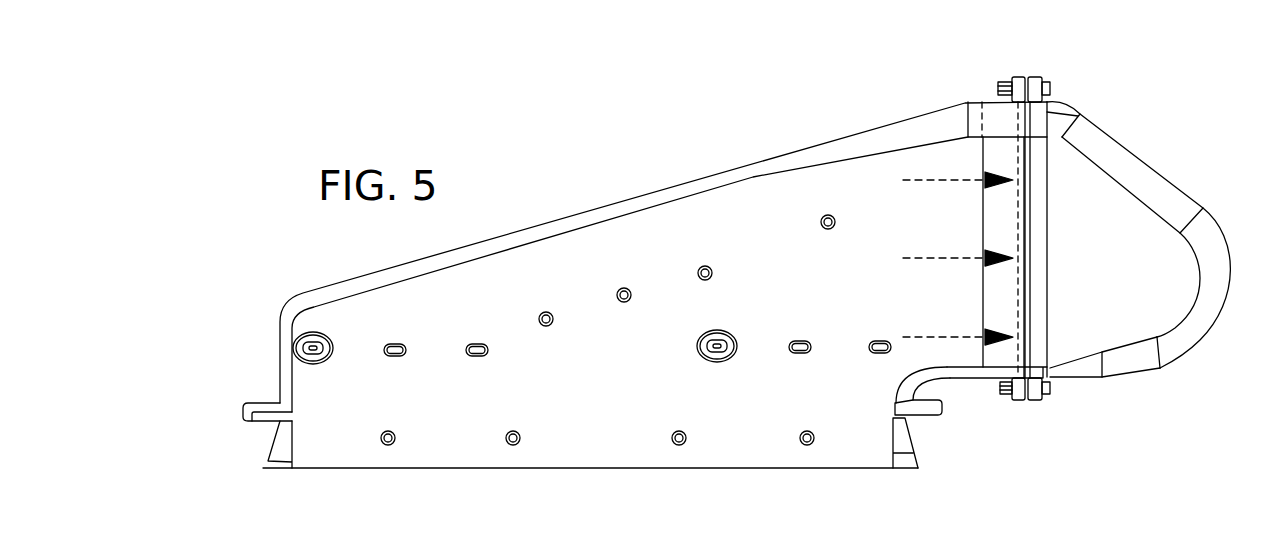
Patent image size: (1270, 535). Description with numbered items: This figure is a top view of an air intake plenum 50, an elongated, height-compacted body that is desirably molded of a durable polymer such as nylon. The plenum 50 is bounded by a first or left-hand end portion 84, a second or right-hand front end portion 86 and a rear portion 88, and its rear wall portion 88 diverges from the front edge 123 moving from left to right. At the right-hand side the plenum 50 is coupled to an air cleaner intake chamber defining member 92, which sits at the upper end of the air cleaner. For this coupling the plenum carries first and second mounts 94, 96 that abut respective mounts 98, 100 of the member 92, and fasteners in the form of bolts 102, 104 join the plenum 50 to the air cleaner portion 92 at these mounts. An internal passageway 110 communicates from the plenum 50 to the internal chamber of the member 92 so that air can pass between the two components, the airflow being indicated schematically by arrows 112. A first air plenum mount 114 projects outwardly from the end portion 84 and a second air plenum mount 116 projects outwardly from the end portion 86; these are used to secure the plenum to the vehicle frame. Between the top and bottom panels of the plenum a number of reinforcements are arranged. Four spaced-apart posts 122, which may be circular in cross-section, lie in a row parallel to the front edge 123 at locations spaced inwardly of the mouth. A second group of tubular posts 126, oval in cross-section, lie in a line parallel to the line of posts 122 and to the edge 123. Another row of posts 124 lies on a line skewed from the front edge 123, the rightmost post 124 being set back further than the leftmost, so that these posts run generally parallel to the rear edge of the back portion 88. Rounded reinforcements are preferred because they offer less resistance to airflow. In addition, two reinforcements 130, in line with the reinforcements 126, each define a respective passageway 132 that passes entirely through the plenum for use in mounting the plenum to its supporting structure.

The plenum 50 is at (602, 248).
The first or left-hand end portion 84 is at (279, 362).
The second or right-hand front end portion 86 is at (917, 443).
The rear portion 88 is at (843, 145).
The air cleaner intake chamber defining member 92 is at (1128, 212).
The first mount 94 is at (1025, 400).
The second mount 96 is at (1016, 77).
The mount of member 92 98 is at (1048, 405).
The mount of member 92 100 is at (1036, 77).
The bolt 102 is at (1052, 388).
The bolt 104 is at (1050, 88).
The internal passageway 110 is at (1018, 160).
The arrows 112 is at (952, 180).
The first air plenum mount 114 is at (257, 421).
The second air plenum mount 116 is at (942, 408).
The posts 122 is at (388, 446).
The front edge 123 is at (577, 469).
The posts 124 is at (546, 327).
The tubular posts 126 is at (407, 349).
The reinforcements 130 is at (310, 363).
The passageway 132 is at (314, 346).